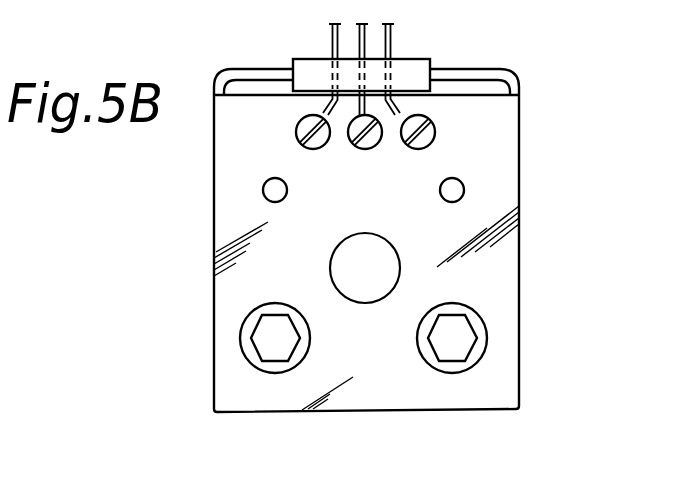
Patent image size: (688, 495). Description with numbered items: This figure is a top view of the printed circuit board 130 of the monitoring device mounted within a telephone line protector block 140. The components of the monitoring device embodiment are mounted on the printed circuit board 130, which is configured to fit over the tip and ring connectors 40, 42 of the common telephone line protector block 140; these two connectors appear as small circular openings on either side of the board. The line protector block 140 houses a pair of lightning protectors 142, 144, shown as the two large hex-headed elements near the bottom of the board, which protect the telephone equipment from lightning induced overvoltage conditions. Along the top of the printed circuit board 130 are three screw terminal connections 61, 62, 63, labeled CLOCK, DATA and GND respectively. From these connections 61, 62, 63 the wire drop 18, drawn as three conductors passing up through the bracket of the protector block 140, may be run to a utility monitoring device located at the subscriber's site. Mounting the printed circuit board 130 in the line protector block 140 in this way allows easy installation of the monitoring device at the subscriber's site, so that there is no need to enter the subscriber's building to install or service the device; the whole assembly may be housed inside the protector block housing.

The wire drop 18 is at (322, 41).
The telephone line protector block 140 is at (498, 66).
The printed circuit board 130 is at (519, 258).
The lightning protector 144 is at (250, 328).
The lightning protector 142 is at (477, 337).
The ring connector 42 is at (263, 190).
The tip connector 40 is at (464, 190).
The connection 63 is at (297, 130).
The connection 62 is at (360, 158).
The connection 61 is at (435, 127).